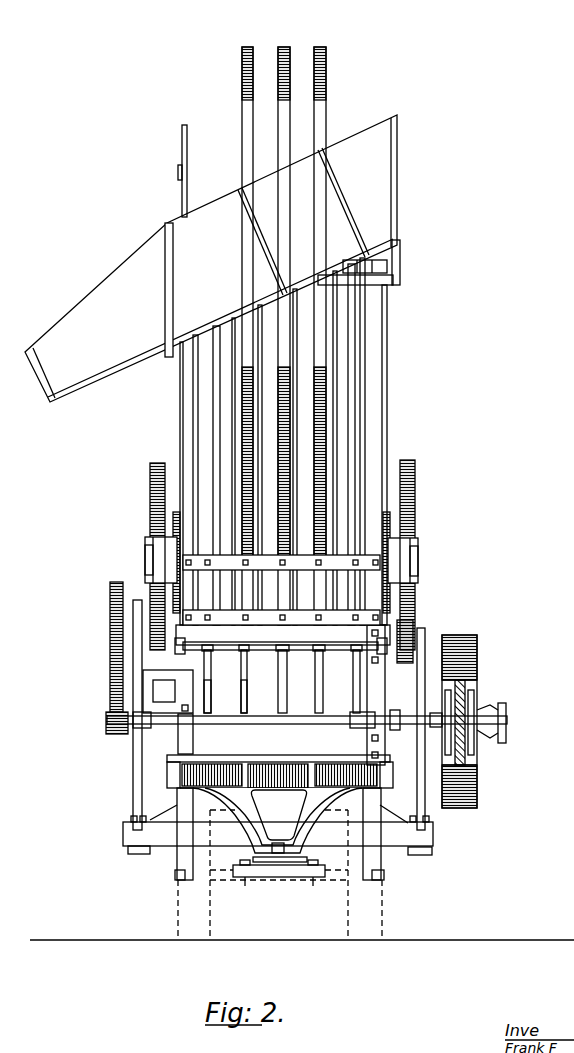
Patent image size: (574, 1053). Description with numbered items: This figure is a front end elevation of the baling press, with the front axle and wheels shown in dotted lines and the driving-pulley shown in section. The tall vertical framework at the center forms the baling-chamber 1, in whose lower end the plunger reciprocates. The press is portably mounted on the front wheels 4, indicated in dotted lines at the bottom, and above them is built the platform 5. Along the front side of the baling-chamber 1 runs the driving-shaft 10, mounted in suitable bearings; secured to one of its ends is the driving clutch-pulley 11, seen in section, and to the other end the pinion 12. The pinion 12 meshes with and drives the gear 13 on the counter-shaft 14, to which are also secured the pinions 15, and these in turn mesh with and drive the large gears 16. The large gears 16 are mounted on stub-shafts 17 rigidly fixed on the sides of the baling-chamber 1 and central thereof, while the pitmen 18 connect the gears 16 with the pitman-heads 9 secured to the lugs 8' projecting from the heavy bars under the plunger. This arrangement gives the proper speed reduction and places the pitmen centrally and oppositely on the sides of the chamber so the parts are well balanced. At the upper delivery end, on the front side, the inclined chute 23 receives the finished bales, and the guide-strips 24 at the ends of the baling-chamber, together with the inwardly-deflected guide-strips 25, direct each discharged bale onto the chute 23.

The baling-chamber 1 is at (302, 418).
The front wheels 4 is at (382, 906).
The platform 5 is at (232, 762).
The laterally-projecting lugs 8' is at (278, 834).
The pitman-head 9 is at (279, 860).
The driving-shaft 10 is at (325, 726).
The driving clutch-pulley 11 is at (477, 655).
The pinion 12 is at (116, 734).
The gear 13 is at (110, 690).
The counter-shaft 14 is at (300, 652).
The pinions 15 is at (190, 632).
The large gears 16 is at (150, 497).
The stub-shafts 17 is at (150, 555).
The pitmen 18 is at (133, 800).
The chute 23 is at (211, 258).
The guide-strips 24 is at (182, 140).
The inwardly-deflected guide-strips 25 is at (320, 45).